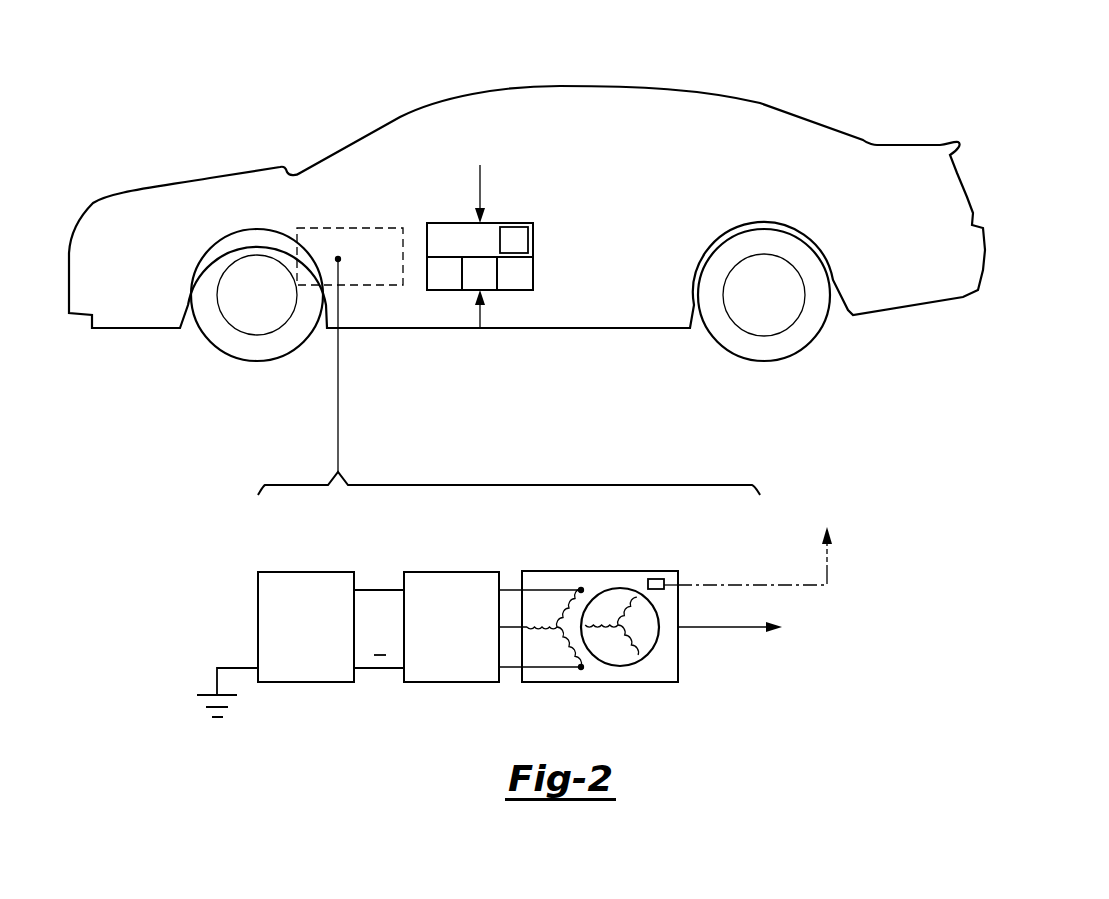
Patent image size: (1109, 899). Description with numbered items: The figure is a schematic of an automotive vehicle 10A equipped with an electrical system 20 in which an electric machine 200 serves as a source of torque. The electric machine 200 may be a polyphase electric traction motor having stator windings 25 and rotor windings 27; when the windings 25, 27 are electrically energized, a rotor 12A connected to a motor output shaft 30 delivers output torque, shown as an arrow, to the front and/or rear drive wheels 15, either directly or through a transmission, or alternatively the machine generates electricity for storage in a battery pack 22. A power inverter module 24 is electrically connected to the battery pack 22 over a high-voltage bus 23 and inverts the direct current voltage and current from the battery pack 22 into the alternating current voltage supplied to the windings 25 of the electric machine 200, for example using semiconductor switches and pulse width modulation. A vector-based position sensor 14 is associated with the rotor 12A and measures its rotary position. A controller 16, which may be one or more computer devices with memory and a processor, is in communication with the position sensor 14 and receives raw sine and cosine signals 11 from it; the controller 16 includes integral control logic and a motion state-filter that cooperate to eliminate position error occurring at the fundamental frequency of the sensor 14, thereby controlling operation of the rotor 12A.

The automotive vehicle 10A is at (822, 56).
The raw sine and cosine signals 11 is at (481, 315).
The rotor 12A is at (618, 588).
The vector-based position sensor 14 is at (655, 579).
The drive wheels 15 is at (250, 313).
The controller 16 is at (533, 240).
The electrical system 20 is at (382, 270).
The battery pack 22 is at (305, 572).
The high-voltage bus 23 is at (380, 590).
The power inverter module 24 is at (453, 572).
The stator windings 25 is at (556, 678).
The rotor windings 27 is at (613, 652).
The motor output shaft 30 is at (718, 628).
The electric machine 200 is at (568, 571).